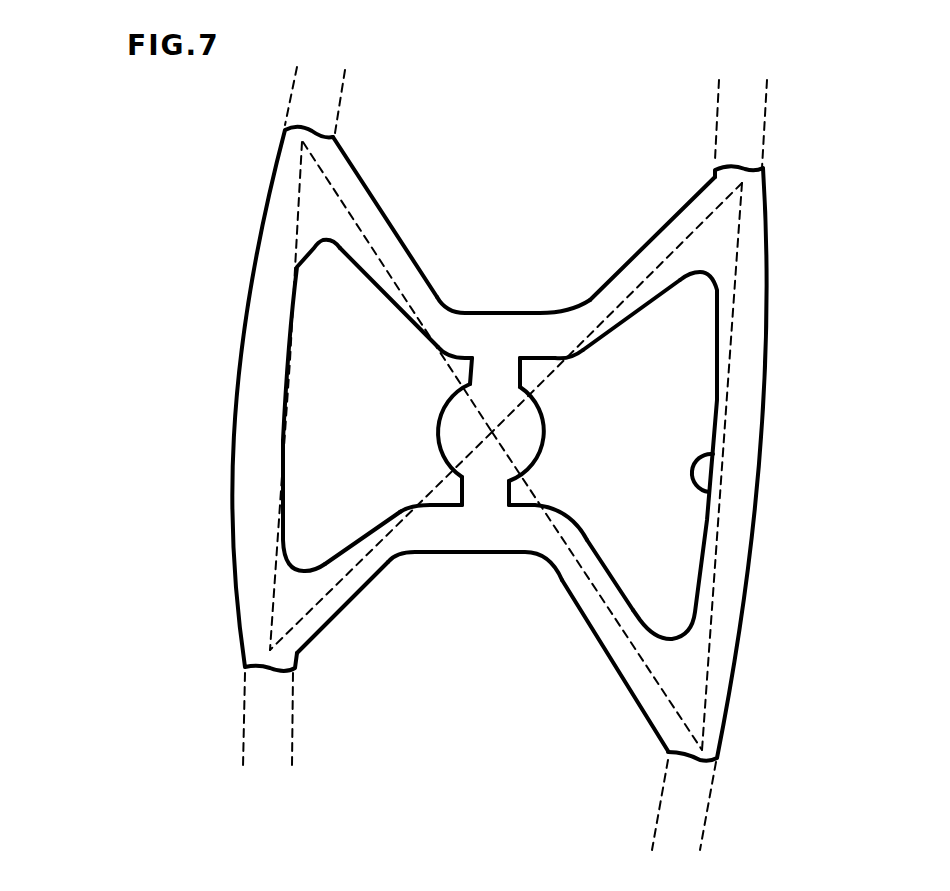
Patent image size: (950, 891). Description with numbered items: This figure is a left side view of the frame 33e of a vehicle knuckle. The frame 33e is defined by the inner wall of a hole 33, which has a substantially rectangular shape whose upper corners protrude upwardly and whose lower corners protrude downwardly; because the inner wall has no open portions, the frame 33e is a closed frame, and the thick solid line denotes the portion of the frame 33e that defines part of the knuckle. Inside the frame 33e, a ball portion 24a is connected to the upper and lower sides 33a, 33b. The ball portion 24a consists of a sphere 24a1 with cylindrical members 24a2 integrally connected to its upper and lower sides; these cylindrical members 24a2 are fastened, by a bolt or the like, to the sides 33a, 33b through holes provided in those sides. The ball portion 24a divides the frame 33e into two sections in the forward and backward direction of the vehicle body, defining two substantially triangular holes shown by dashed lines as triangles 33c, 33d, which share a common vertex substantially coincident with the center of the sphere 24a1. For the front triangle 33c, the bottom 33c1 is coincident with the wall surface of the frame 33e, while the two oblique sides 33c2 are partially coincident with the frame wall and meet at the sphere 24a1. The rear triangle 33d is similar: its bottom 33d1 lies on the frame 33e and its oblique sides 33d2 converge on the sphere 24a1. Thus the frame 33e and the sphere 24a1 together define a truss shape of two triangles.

The hole 33 is at (710, 490).
The upper side 33a is at (507, 313).
The lower side 33b is at (483, 556).
The triangle 33c is at (271, 588).
The bottom 33c1 is at (268, 641).
The oblique sides 33c2 is at (380, 257).
The triangle 33d is at (713, 579).
The bottom 33d1 is at (707, 697).
The oblique sides 33d2 is at (673, 252).
The frame 33e is at (783, 228).
The ball portion 24a is at (283, 452).
The sphere 24a1 is at (433, 429).
The cylindrical members 24a2 is at (462, 365).